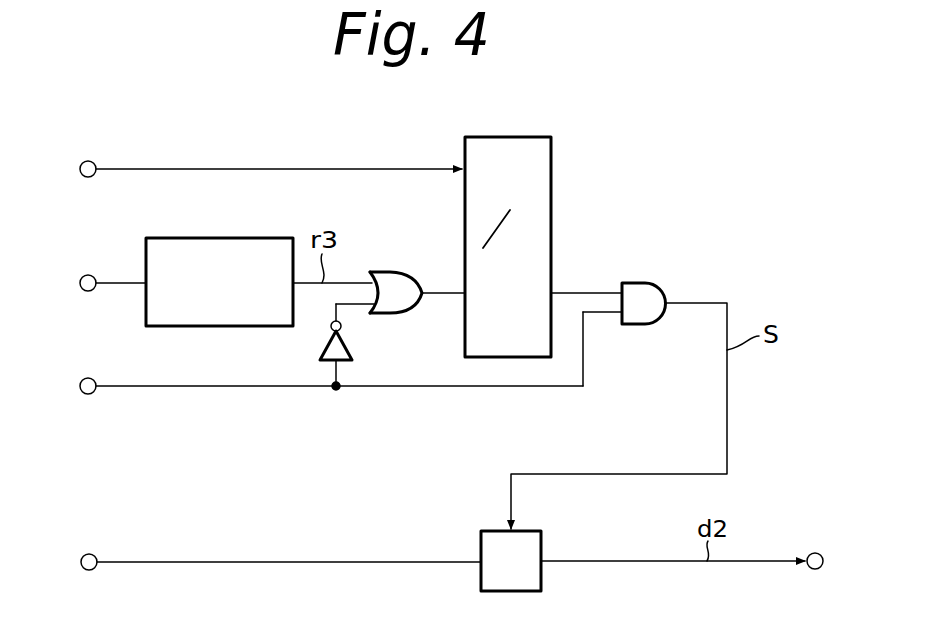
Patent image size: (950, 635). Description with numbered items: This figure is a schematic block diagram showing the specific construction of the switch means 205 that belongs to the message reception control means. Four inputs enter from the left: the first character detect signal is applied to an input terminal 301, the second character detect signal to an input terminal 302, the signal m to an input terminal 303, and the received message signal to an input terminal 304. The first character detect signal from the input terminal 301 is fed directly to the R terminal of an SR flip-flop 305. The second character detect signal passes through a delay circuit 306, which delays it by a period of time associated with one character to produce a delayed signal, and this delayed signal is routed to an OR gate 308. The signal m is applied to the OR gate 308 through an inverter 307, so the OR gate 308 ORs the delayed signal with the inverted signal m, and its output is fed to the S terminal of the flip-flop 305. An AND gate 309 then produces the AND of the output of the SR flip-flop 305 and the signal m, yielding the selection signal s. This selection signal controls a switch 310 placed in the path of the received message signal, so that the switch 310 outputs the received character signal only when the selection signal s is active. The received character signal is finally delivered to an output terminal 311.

The switch means 205 is at (649, 182).
The input terminal 301 is at (90, 178).
The input terminal 302 is at (90, 292).
The input terminal 303 is at (90, 395).
The input terminal 304 is at (90, 554).
The SR flip-flop 305 is at (551, 190).
The delay circuit 306 is at (236, 238).
The inverter 307 is at (318, 357).
The OR gate 308 is at (398, 272).
The AND gate 309 is at (661, 283).
The switch 310 is at (541, 536).
The output terminal 311 is at (815, 553).